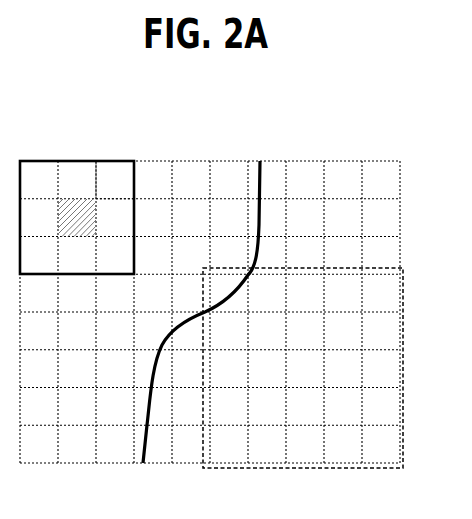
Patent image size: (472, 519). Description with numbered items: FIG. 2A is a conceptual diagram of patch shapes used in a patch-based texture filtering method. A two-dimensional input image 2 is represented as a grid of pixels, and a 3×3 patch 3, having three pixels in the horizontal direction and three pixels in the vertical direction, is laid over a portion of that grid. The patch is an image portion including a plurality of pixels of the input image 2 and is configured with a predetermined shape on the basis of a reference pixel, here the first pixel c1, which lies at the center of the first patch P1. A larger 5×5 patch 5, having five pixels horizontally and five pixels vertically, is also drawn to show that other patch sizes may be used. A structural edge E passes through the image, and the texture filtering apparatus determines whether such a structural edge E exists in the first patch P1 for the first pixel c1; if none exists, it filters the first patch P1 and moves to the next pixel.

The input image 2 is at (341, 160).
The 3×3 patch 3 is at (42, 160).
The first pixel c1 is at (73, 200).
The first patch P1 is at (113, 160).
The 5×5 patch 5 is at (405, 403).
The structural edge E is at (144, 466).